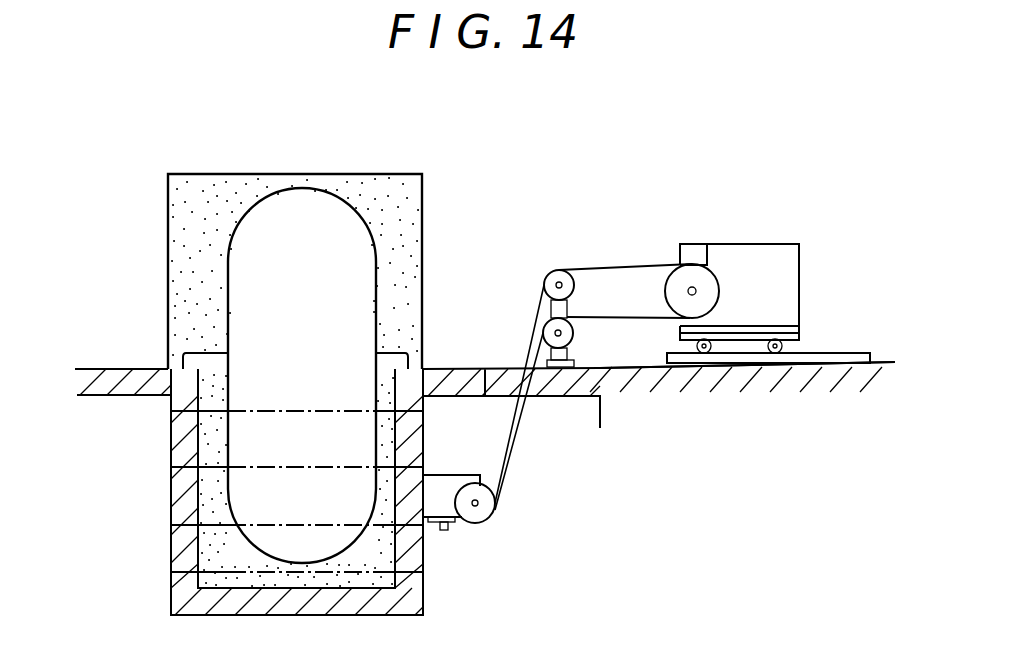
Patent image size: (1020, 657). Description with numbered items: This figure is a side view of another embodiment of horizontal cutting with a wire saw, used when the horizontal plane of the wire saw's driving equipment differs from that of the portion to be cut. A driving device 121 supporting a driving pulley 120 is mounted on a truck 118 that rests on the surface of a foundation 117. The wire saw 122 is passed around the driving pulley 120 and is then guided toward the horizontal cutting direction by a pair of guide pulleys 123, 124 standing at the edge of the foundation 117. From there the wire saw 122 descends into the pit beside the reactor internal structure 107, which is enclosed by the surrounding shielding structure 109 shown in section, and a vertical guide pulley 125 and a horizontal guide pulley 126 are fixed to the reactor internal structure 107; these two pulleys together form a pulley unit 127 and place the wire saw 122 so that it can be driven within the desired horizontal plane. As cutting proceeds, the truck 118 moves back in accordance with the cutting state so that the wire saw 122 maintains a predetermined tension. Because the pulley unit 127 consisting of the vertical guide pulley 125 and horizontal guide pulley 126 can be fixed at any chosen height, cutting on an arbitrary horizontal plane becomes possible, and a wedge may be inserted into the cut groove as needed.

The reactor internal structure 107 is at (392, 275).
The concrete shielding block 109 is at (368, 174).
The foundation 117 is at (860, 353).
The truck 118 is at (800, 310).
The driving pulley 120 is at (700, 275).
The driving device 121 is at (780, 250).
The wire saw 122 is at (632, 270).
The guide pulley 123 is at (557, 268).
The guide pulley 124 is at (566, 333).
The vertical guide pulley 125 is at (500, 511).
The horizontal guide pulley 126 is at (463, 538).
The pulley unit 127 is at (452, 470).